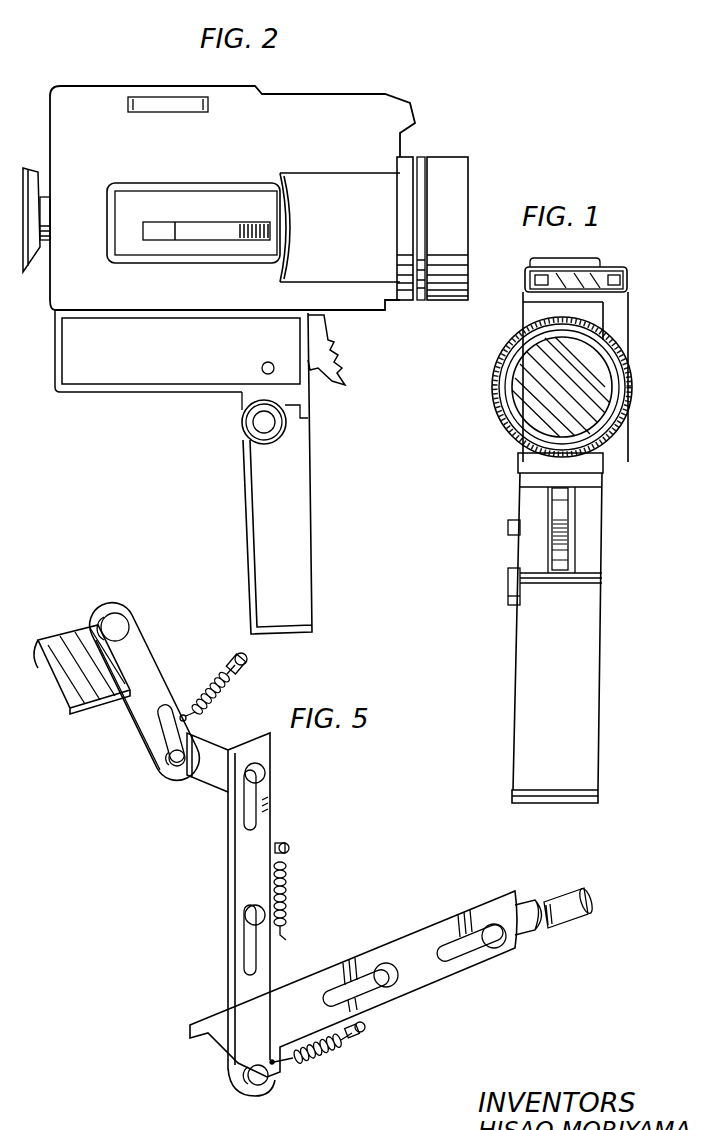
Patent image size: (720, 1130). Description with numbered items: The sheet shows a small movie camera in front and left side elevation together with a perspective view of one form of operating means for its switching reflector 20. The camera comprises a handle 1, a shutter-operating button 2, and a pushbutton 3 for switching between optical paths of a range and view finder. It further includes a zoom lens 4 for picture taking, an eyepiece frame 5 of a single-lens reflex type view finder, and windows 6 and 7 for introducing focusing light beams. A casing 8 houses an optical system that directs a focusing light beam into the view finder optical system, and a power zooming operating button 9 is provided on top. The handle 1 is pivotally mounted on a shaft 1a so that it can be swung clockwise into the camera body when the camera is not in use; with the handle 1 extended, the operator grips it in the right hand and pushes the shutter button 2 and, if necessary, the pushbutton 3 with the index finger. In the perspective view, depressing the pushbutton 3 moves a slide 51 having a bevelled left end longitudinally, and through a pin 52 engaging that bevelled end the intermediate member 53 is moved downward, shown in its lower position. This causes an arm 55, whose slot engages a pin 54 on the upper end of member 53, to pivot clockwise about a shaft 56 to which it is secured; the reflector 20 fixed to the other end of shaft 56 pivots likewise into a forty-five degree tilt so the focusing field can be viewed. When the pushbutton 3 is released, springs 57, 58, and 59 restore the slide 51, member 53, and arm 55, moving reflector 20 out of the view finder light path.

In FIG. 2, the handle 1 is at (287, 502).
In FIG. 1, the handle 1 is at (525, 668).
In FIG. 2, the shaft 1a is at (242, 422).
In FIG. 1, the shaft 1a is at (507, 589).
In FIG. 2, the shutter-operating button 2 is at (320, 348).
In FIG. 1, the shutter-operating button 2 is at (560, 505).
In FIG. 2, the pushbutton 3 is at (262, 368).
In FIG. 1, the pushbutton 3 is at (507, 526).
In FIG. 5, the pushbutton 3 is at (556, 890).
In FIG. 2, the zoom lens 4 is at (446, 170).
In FIG. 1, the zoom lens 4 is at (522, 365).
In FIG. 2, the eyepiece frame 5 is at (36, 185).
In FIG. 1, the window 6 is at (624, 280).
In FIG. 1, the window 7 is at (530, 280).
In FIG. 1, the casing 8 is at (618, 338).
In FIG. 2, the power zooming operating button 9 is at (160, 103).
In FIG. 5, the switching reflector 20 is at (103, 693).
In FIG. 5, the slide 51 is at (420, 975).
In FIG. 5, the pin 52 is at (268, 1079).
In FIG. 5, the intermediate member 53 is at (245, 873).
In FIG. 5, the pin 54 is at (173, 767).
In FIG. 5, the arm 55 is at (140, 708).
In FIG. 5, the shaft 56 is at (108, 620).
In FIG. 5, the spring 57 is at (325, 1050).
In FIG. 5, the spring 58 is at (289, 880).
In FIG. 5, the spring 59 is at (205, 695).